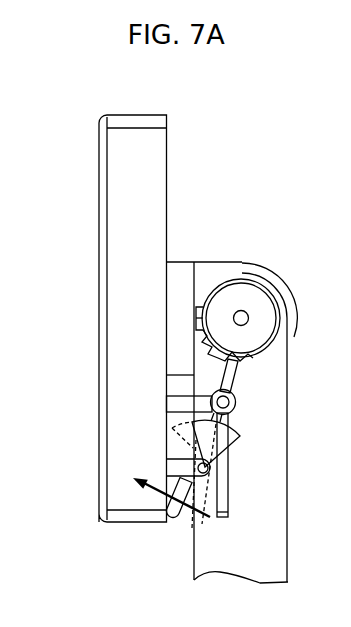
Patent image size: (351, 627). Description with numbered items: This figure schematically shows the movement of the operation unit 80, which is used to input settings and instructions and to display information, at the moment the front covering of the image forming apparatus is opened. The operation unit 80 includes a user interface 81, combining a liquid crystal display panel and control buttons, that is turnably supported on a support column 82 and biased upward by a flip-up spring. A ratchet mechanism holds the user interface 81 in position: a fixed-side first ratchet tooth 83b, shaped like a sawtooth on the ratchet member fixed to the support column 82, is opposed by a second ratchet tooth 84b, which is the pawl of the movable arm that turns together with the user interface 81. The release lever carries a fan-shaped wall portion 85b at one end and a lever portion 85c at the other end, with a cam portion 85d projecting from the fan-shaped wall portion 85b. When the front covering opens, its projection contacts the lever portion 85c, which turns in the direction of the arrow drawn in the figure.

The operation unit 80 is at (207, 152).
The user interface 81 is at (99, 220).
The support column 82 is at (207, 565).
The first ratchet tooth 83b is at (214, 336).
The second ratchet tooth 84b is at (224, 356).
The fan-shaped wall portion 85b is at (180, 437).
The lever portion 85c is at (178, 503).
The cam portion 85d is at (180, 430).